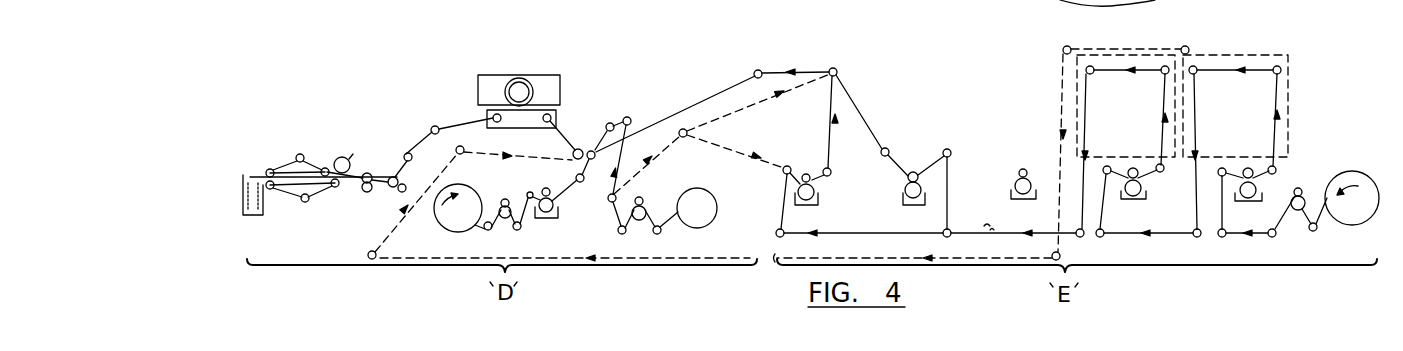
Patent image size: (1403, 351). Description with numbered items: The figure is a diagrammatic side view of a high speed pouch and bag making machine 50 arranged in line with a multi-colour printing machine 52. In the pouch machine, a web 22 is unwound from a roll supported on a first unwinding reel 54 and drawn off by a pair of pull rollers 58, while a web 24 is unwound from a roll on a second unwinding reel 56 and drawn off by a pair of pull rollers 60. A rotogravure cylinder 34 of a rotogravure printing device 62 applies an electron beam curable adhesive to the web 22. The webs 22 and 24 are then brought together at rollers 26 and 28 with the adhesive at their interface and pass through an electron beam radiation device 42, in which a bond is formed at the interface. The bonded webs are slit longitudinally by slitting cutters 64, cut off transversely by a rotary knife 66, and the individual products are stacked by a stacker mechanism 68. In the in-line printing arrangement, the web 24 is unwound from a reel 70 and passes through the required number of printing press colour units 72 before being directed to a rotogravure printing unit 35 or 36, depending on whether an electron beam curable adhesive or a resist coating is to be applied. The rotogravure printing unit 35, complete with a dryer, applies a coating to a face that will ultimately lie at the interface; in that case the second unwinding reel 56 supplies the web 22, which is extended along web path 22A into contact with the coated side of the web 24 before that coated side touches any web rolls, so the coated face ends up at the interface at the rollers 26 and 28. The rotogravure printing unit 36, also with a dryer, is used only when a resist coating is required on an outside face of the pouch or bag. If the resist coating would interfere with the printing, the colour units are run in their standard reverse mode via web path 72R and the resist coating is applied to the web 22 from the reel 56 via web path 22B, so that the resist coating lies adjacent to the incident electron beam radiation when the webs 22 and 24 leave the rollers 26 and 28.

The web 22 is at (477, 172).
The web path 22A is at (748, 110).
The web path 22B is at (740, 143).
The web 24 is at (671, 210).
The roller 26 is at (593, 147).
The roller 28 is at (575, 154).
The rotogravure cylinder 34 is at (554, 214).
The rotogravure printing unit 35 is at (909, 201).
The rotogravure printing unit 36 is at (818, 184).
The electron beam radiation device 42 is at (541, 73).
The high speed pouch and bag making machine 50 is at (640, 108).
The multi-colour printing machine 52 is at (792, 45).
The first unwinding reel 54 is at (442, 224).
The second unwinding reel 56 is at (713, 220).
The pull rollers 58 is at (504, 221).
The pull rollers 60 is at (640, 222).
The rotogravure printing device 62 is at (535, 222).
The slitting cutters 64 is at (395, 177).
The rotary knife 66 is at (340, 157).
The stacker mechanism 68 is at (289, 158).
The reel 70 is at (1362, 186).
The printing press colour units 72 is at (1127, 53).
The web path 72R is at (1058, 85).